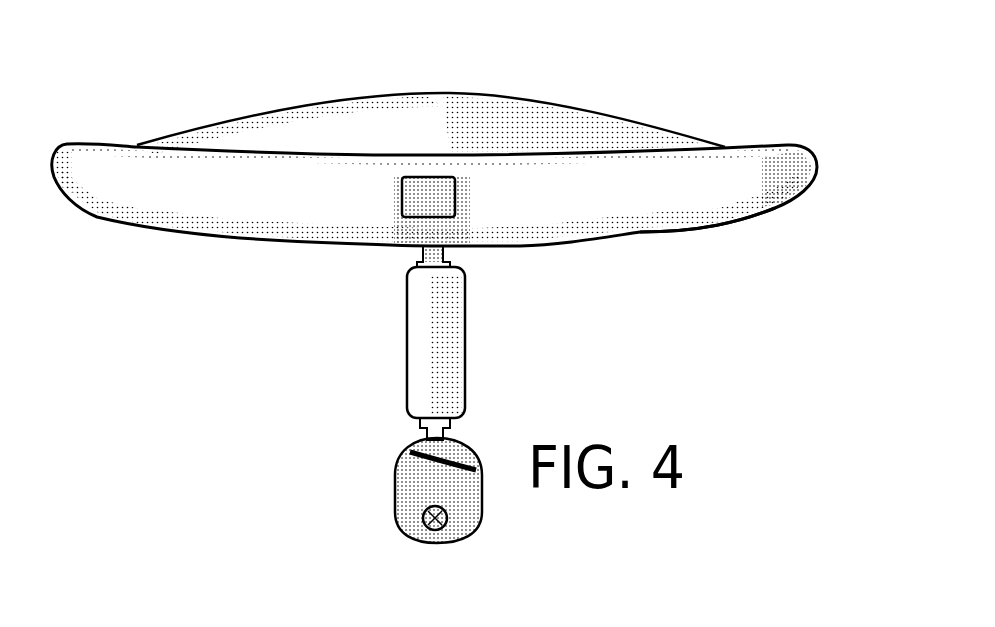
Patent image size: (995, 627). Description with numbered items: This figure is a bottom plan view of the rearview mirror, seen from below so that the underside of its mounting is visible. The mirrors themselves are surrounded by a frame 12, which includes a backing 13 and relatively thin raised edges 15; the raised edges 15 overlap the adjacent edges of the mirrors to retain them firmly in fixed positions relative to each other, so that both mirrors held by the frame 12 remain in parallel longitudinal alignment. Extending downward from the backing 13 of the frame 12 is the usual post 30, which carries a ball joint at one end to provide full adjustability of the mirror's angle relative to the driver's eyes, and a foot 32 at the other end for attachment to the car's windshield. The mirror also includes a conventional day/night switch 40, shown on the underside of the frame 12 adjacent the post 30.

The frame 12 is at (817, 182).
The backing 13 is at (715, 193).
The raised edges 15 is at (532, 100).
The post 30 is at (450, 357).
The foot 32 is at (395, 482).
The day/night switch 40 is at (460, 200).